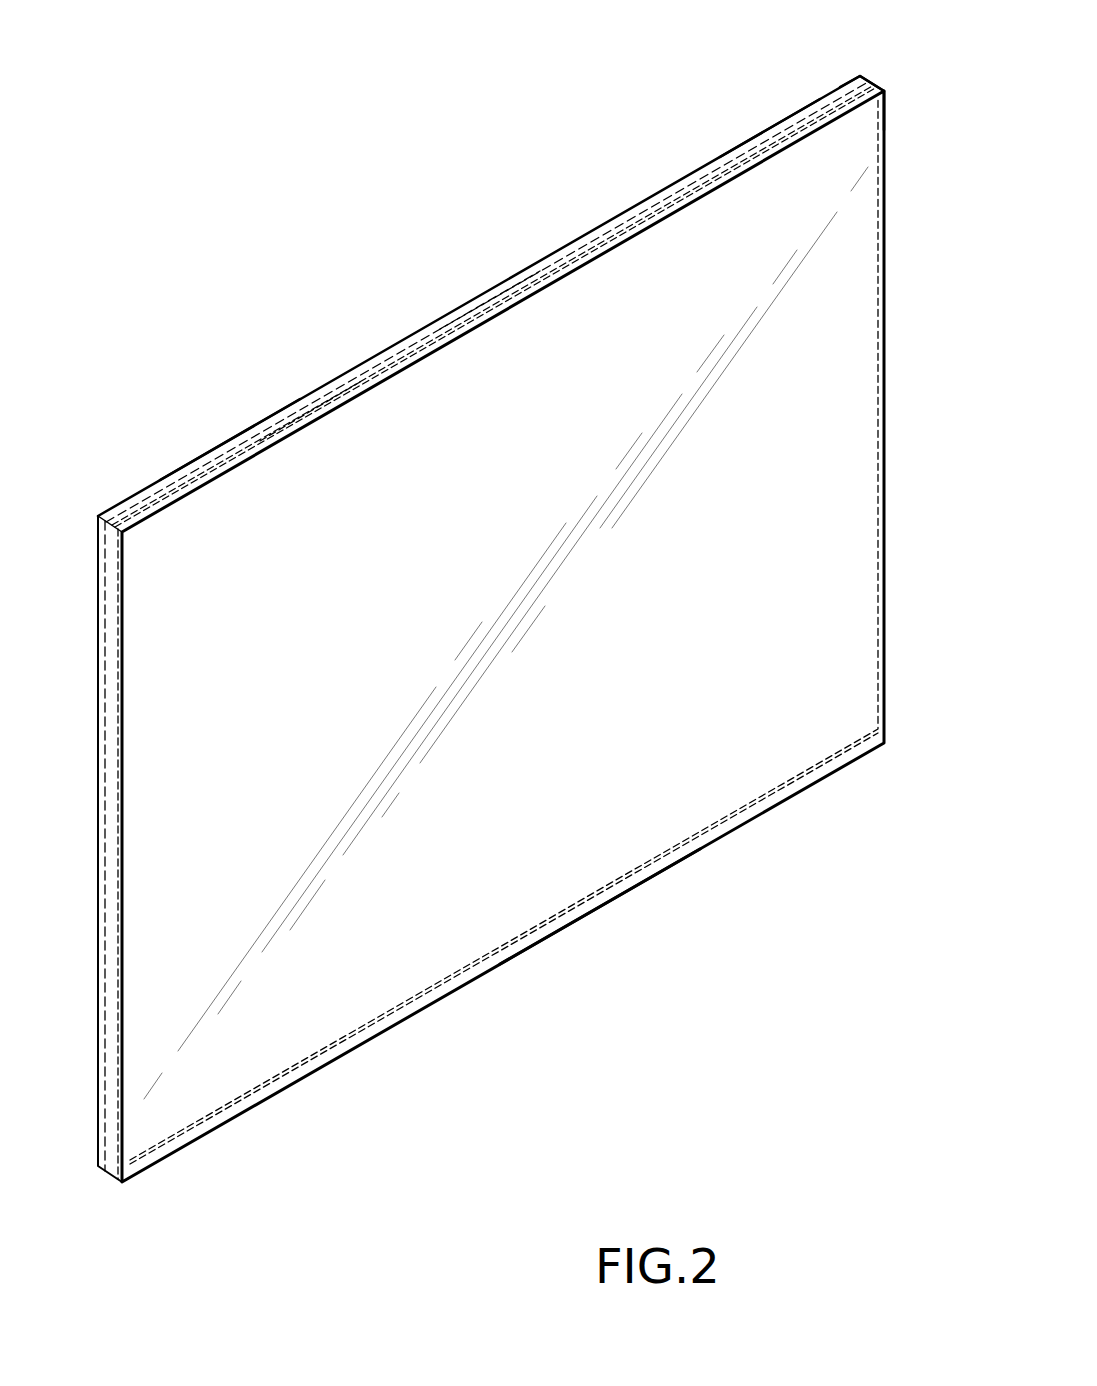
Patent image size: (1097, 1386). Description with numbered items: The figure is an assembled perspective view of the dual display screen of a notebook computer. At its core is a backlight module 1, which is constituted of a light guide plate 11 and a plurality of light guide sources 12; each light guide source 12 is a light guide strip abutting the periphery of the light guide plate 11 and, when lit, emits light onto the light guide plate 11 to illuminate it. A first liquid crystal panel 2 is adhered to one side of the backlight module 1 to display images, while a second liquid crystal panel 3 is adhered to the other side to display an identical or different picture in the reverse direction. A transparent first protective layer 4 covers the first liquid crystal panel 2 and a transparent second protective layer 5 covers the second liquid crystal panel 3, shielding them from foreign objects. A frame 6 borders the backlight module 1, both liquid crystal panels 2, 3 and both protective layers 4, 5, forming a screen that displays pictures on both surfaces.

The backlight module 1 is at (103, 548).
The light guide plate 11 is at (93, 612).
The first liquid crystal panel 2 is at (305, 420).
The second liquid crystal panel 3 is at (232, 440).
The first protective layer 4 is at (558, 869).
The second protective layer 5 is at (489, 292).
The frame 6 is at (870, 80).
The light guide source 12 is at (767, 128).